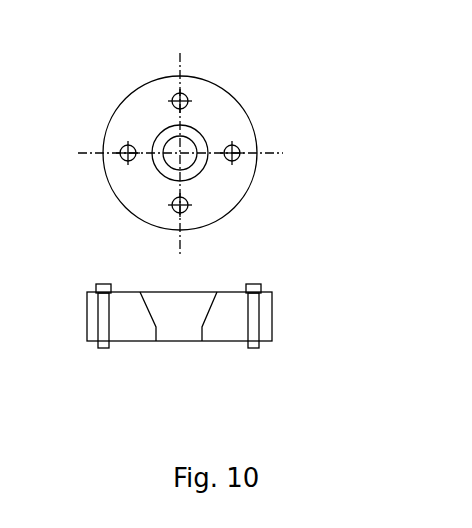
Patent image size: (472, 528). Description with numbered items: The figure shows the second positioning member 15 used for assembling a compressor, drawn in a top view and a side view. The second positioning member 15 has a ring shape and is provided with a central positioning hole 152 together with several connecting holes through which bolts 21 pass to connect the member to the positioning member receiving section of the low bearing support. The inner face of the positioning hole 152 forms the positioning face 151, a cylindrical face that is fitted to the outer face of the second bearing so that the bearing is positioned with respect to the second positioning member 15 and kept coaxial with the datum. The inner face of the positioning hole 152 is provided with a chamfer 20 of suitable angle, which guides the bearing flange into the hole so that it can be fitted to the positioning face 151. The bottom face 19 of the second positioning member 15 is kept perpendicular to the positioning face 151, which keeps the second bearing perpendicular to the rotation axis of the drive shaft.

The second positioning member 15 is at (208, 35).
The positioning hole 152 is at (190, 148).
The bolts 21 is at (217, 218).
The bottom face 19 is at (118, 340).
The chamfer 20 is at (152, 308).
The positioning face 151 is at (200, 327).